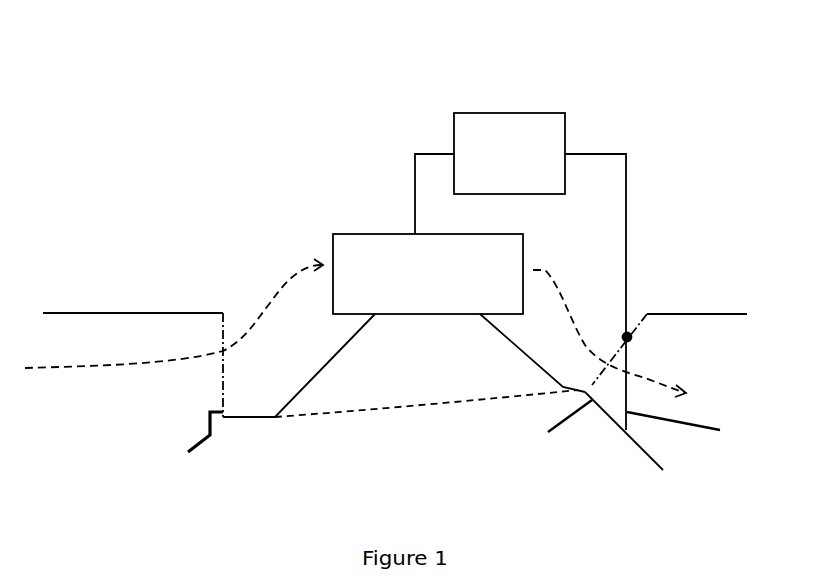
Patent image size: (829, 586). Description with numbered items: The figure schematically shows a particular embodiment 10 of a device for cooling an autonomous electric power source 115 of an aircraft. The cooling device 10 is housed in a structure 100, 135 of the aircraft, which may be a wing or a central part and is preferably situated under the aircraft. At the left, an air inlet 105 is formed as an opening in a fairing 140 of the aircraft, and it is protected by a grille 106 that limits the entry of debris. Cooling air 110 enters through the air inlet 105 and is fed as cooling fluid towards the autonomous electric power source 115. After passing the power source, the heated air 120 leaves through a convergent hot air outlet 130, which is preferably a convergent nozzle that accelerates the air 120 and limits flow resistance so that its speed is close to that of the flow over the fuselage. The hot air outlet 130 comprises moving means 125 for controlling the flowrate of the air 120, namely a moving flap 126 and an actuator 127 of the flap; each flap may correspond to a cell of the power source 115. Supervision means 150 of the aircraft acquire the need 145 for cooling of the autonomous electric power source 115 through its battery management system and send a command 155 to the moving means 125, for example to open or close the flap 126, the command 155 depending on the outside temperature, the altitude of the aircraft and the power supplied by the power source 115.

The cooling device 10 is at (247, 80).
The aircraft structure 100 is at (115, 313).
The air inlet 105 is at (222, 380).
The grille 106 is at (185, 444).
The cooling air 110 is at (258, 316).
The autonomous electric power source 115 is at (372, 252).
The hot air 120 is at (540, 270).
The moving means for controlling air flowrate 125 is at (612, 418).
The moving flap 126 is at (544, 427).
The actuator 127 is at (696, 428).
The hot air outlet 130 is at (645, 316).
The aircraft structure 135 is at (697, 314).
The fairing 140 is at (440, 405).
The need for cooling 145 is at (437, 152).
The supervision means 150 is at (485, 150).
The command 155 is at (597, 152).